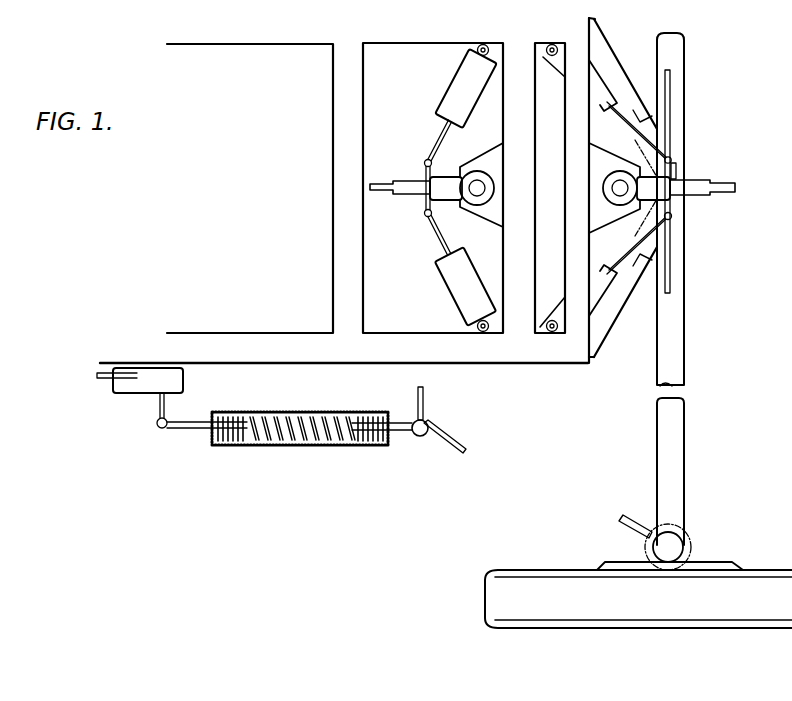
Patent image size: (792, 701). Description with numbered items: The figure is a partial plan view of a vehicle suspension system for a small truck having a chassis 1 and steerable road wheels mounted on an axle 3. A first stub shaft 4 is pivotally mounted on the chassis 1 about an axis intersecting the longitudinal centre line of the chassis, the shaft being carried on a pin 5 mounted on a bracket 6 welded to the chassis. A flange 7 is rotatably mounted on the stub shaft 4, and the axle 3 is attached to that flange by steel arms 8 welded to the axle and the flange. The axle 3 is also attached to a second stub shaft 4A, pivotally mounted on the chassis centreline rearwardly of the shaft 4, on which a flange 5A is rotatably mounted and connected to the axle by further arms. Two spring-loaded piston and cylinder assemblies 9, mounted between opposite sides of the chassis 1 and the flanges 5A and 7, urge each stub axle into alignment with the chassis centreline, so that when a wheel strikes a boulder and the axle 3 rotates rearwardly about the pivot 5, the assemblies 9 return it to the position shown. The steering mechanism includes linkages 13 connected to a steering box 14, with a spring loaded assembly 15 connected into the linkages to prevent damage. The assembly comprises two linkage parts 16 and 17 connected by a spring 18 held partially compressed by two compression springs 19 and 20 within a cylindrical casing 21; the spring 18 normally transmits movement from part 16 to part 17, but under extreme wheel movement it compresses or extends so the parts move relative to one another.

The chassis 1 is at (572, 356).
The axle 3 is at (680, 497).
The first stub shaft 4 is at (707, 181).
The second stub shaft 4A is at (407, 177).
The pin 5 is at (672, 216).
The flange 5A is at (430, 203).
The bracket 6 is at (591, 143).
The flange 7 is at (676, 170).
The arms 8 is at (670, 80).
The spring-loaded piston and cylinder assemblies 9 is at (547, 63).
The linkages 13 is at (457, 443).
The steering box 14 is at (130, 392).
The spring loaded assembly 15 is at (302, 400).
The linkage part 16 is at (178, 432).
The linkage part 17 is at (408, 433).
The spring 18 is at (286, 435).
The compression spring 19 is at (241, 438).
The compression spring 20 is at (372, 447).
The cylindrical casing 21 is at (329, 434).